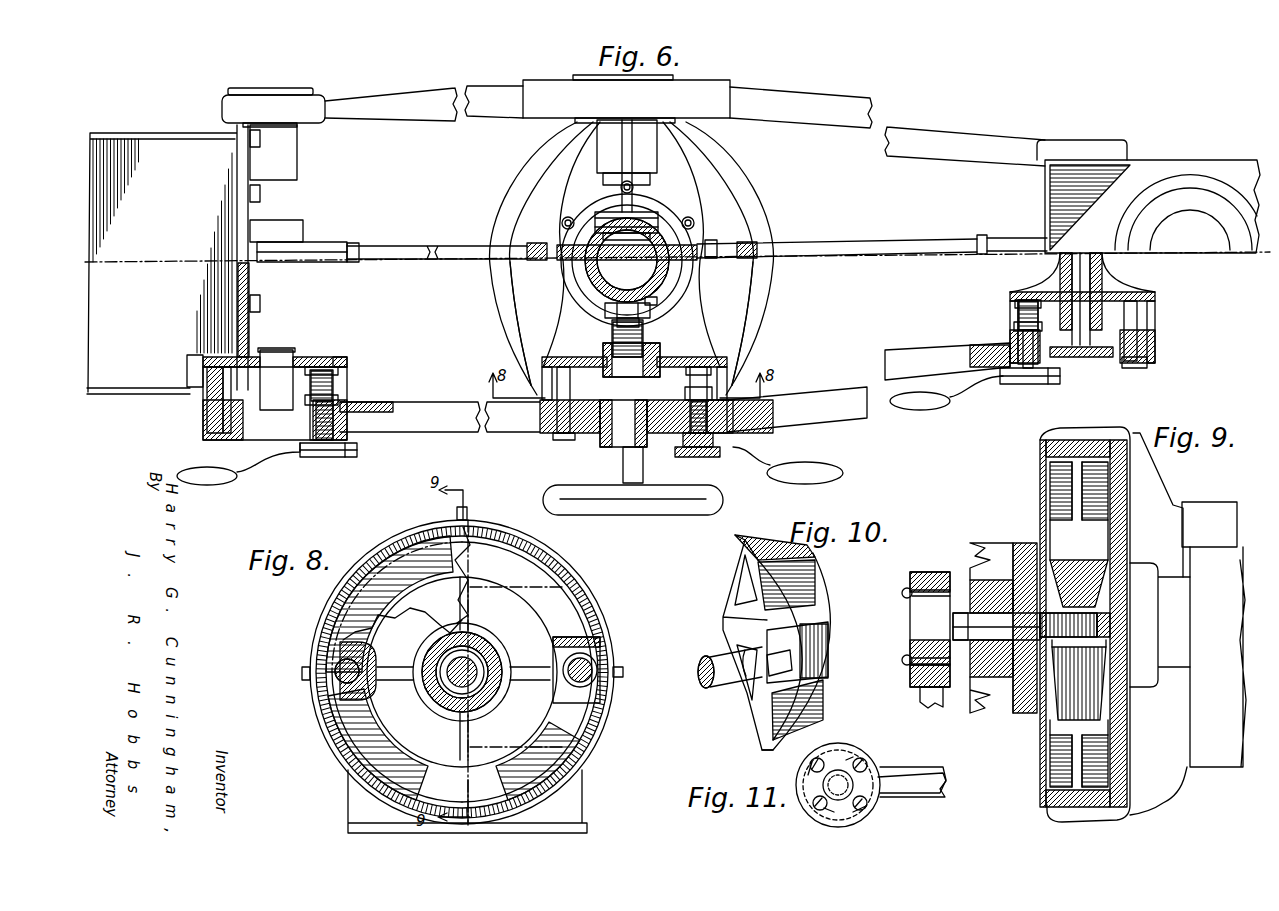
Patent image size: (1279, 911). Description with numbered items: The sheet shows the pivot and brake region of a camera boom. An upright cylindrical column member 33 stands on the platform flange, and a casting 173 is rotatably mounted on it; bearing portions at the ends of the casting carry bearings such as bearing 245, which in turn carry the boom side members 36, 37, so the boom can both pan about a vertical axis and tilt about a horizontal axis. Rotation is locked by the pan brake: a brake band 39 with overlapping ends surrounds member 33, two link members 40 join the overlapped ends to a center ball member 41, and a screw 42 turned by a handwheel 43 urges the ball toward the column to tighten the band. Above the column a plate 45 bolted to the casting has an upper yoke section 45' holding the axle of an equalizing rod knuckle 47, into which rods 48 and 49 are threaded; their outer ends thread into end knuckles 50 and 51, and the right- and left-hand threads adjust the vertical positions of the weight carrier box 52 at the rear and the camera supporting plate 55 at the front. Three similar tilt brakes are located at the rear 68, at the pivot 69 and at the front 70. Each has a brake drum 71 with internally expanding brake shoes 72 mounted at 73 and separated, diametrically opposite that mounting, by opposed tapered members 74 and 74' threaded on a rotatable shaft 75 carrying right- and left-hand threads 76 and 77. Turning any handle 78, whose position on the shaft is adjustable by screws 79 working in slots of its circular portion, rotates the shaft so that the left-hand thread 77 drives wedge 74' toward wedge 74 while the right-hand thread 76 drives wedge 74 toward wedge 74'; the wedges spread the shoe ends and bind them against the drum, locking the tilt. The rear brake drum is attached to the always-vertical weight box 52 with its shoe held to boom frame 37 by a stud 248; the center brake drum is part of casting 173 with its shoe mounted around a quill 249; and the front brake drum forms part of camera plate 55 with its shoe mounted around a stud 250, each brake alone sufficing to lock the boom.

In FIG. 6, the upright cylindrical column member 33 is at (694, 251).
In FIG. 6, the boom side member 36 is at (426, 90).
In FIG. 6, the boom side member 37 is at (850, 379).
In FIG. 9, the boom side member 37 is at (978, 550).
In FIG. 6, the brake band 39 is at (640, 297).
In FIG. 6, the link member 40 is at (613, 319).
In FIG. 6, the center ball member 41 is at (649, 317).
In FIG. 6, the screw 42 is at (612, 344).
In FIG. 8, the screw 42 is at (485, 666).
In FIG. 6, the handwheel 43 is at (584, 502).
In FIG. 6, the plate 45 is at (640, 205).
In FIG. 6, the upper yoke section 45' is at (597, 213).
In FIG. 6, the equalizing rod knuckle 47 is at (570, 249).
In FIG. 6, the rod 48 is at (438, 251).
In FIG. 6, the rod 49 is at (865, 228).
In FIG. 6, the end knuckle 50 is at (331, 248).
In FIG. 6, the end knuckle 51 is at (1020, 238).
In FIG. 6, the weight carrier box 52 is at (180, 132).
In FIG. 6, the camera supporting plate 55 is at (1143, 172).
In FIG. 6, the rear tilt brake 68 is at (357, 357).
In FIG. 6, the center tilt brake 69 is at (538, 374).
In FIG. 8, the center tilt brake 69 is at (330, 601).
In FIG. 6, the front tilt brake 70 is at (1012, 298).
In FIG. 6, the brake drum 71 is at (531, 357).
In FIG. 8, the brake drum 71 is at (328, 633).
In FIG. 9, the brake drum 71 is at (1060, 433).
In FIG. 6, the brake shoe 72 is at (200, 373).
In FIG. 8, the brake shoe 72 is at (570, 589).
In FIG. 10, the brake shoe 72 is at (817, 592).
In FIG. 9, the brake shoe 72 is at (1050, 460).
In FIG. 6, the brake shoe mounting 73 is at (557, 383).
In FIG. 8, the brake shoe mounting 73 is at (320, 688).
In FIG. 6, the tapered member 74 is at (674, 369).
In FIG. 10, the tapered member 74 is at (792, 642).
In FIG. 9, the tapered member 74 is at (1106, 640).
In FIG. 6, the tapered member 74' is at (673, 363).
In FIG. 8, the tapered member 74' is at (596, 627).
In FIG. 10, the tapered member 74' is at (752, 692).
In FIG. 9, the tapered member 74' is at (1064, 635).
In FIG. 6, the rotatable shaft 75 is at (727, 437).
In FIG. 8, the rotatable shaft 75 is at (597, 666).
In FIG. 10, the rotatable shaft 75 is at (710, 657).
In FIG. 9, the rotatable shaft 75 is at (985, 640).
In FIG. 6, the right-hand thread 76 is at (702, 362).
In FIG. 9, the right-hand thread 76 is at (1112, 631).
In FIG. 6, the left-hand thread 77 is at (722, 414).
In FIG. 9, the left-hand thread 77 is at (1040, 636).
In FIG. 6, the handle 78 is at (240, 481).
In FIG. 11, the handle 78 is at (926, 778).
In FIG. 9, the handle 78 is at (923, 692).
In FIG. 6, the screw 79 is at (688, 463).
In FIG. 11, the screw 79 is at (860, 762).
In FIG. 9, the screw 79 is at (905, 594).
In FIG. 6, the casting 173 is at (705, 166).
In FIG. 9, the casting 173 is at (1190, 520).
In FIG. 6, the bearing 245 is at (600, 441).
In FIG. 6, the stud 248 is at (278, 355).
In FIG. 6, the quill 249 is at (572, 444).
In FIG. 8, the quill 249 is at (484, 655).
In FIG. 6, the stud 250 is at (1090, 353).